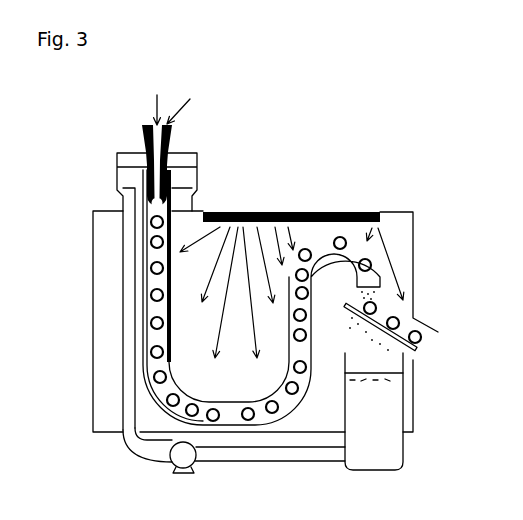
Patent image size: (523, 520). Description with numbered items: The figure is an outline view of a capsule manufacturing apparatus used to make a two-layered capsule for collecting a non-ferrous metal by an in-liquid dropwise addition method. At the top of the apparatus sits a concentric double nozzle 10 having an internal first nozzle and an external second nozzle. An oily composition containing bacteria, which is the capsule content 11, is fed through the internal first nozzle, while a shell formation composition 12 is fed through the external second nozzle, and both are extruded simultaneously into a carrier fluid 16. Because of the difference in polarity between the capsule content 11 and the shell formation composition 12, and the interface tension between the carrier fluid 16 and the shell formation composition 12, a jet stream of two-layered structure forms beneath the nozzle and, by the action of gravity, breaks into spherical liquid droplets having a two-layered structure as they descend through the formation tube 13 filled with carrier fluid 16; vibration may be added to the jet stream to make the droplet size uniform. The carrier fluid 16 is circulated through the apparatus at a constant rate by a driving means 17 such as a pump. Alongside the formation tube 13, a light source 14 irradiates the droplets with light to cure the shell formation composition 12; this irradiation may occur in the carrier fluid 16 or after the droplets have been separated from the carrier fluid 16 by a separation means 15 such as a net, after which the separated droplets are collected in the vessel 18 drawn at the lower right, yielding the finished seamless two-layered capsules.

The concentric double nozzle 10 is at (172, 141).
The capsule content 11 is at (158, 101).
The shell formation composition 12 is at (183, 105).
The formation tube 13 is at (172, 202).
The light source 14 is at (293, 212).
The separation means 15 is at (417, 348).
The carrier fluid 16 is at (163, 188).
The driving means 17 is at (234, 450).
The tank 18 is at (374, 411).